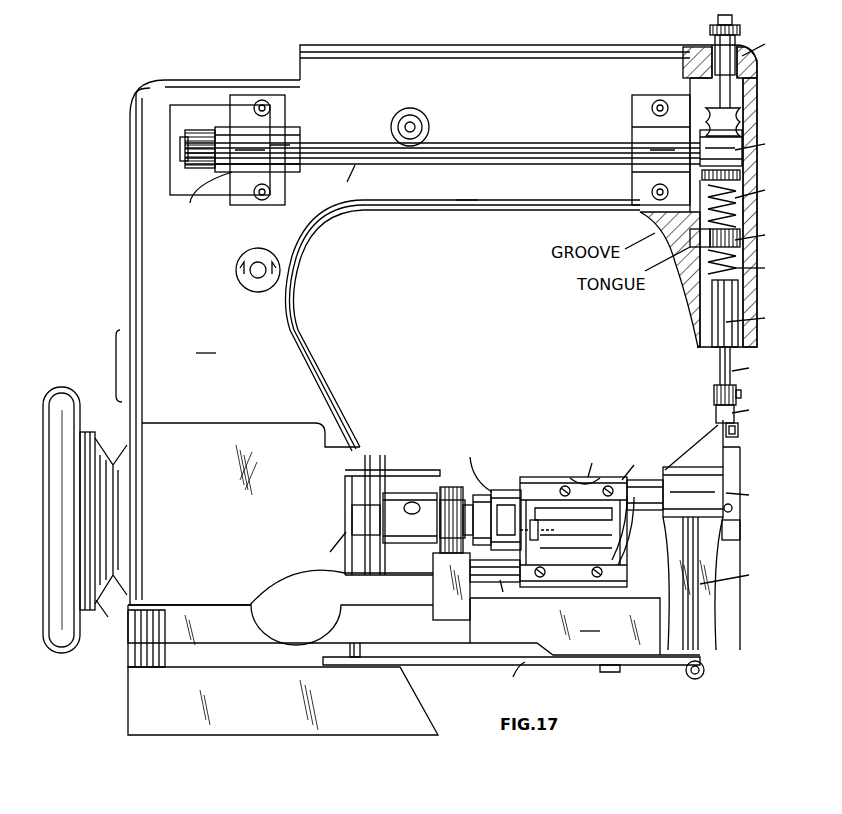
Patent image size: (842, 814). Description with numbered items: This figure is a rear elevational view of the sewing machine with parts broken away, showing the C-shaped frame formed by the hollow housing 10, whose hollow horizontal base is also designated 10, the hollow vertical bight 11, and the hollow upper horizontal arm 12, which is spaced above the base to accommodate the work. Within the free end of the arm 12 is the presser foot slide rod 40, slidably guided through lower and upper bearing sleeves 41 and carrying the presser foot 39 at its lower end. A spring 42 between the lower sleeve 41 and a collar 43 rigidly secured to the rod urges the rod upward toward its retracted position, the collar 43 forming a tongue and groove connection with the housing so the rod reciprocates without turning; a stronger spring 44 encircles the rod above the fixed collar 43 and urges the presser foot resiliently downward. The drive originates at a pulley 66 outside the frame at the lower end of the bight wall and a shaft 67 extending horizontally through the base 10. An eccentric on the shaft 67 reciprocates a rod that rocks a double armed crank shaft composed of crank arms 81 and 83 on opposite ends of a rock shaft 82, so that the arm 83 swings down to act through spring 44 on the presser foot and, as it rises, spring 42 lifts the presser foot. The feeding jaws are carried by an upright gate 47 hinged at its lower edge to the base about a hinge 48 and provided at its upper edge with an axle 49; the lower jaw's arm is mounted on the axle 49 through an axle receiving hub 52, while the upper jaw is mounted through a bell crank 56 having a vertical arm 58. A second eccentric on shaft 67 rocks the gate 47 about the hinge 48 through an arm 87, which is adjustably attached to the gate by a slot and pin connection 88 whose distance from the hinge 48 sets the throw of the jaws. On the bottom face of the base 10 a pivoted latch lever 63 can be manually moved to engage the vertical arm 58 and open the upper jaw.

The hollow housing 10 is at (414, 666).
The hollow vertical bight 11 is at (274, 426).
The hollow upper horizontal arm 12 is at (443, 325).
The presser foot 39 is at (743, 411).
The slide rod 40 is at (746, 366).
The bearing sleeves 41 is at (747, 181).
The spring 42 is at (748, 263).
The collar 43 is at (739, 236).
The spring 44 is at (748, 203).
The gate 47 is at (577, 532).
The hinge 48 is at (476, 586).
The axle 49 is at (574, 471).
The axle receiving hub 52 is at (642, 478).
The bell crank 56 is at (717, 535).
The vertical arm 58 is at (717, 583).
The latch lever 63 is at (513, 675).
The pulley 66 is at (85, 520).
The shaft 67 is at (399, 515).
The crank arm 81 is at (430, 157).
The rock shaft 82 is at (442, 170).
The crank arm 83 is at (744, 155).
The arm 87 is at (489, 493).
The slot and pin connection 88 is at (548, 530).